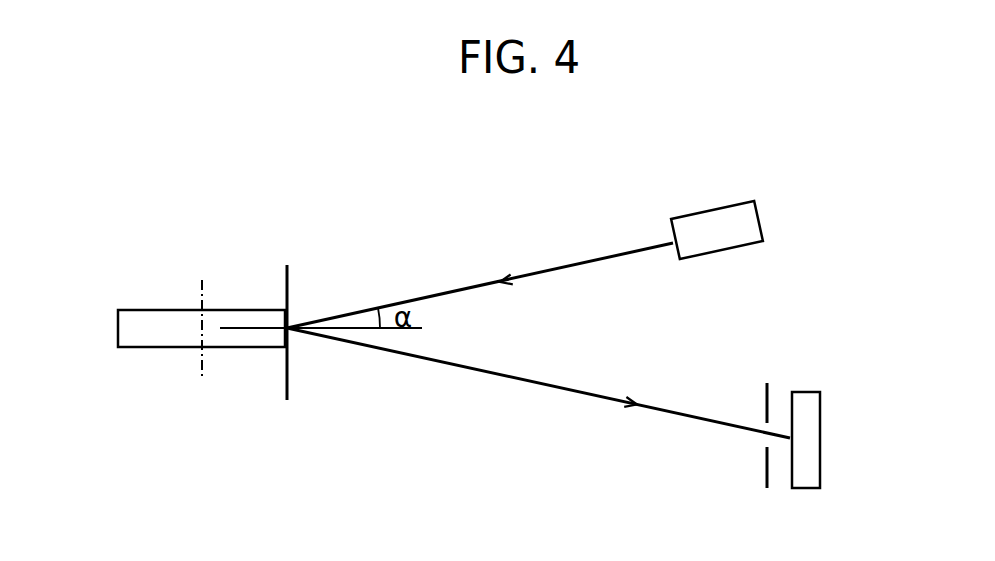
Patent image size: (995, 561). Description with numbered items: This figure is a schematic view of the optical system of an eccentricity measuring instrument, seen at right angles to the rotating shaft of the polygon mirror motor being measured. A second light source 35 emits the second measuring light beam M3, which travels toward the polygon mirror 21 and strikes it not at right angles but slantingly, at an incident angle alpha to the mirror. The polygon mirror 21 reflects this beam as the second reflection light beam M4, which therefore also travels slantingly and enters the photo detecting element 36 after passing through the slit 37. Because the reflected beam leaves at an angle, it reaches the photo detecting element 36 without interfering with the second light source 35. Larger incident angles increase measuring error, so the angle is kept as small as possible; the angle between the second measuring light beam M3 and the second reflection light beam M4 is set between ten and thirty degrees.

The polygon mirror 21 is at (248, 318).
The second light source 35 is at (723, 207).
The photo detecting element 36 is at (812, 398).
The slit 37 is at (767, 388).
The second measuring light beam M3 is at (562, 265).
The second reflection light beam M4 is at (592, 392).